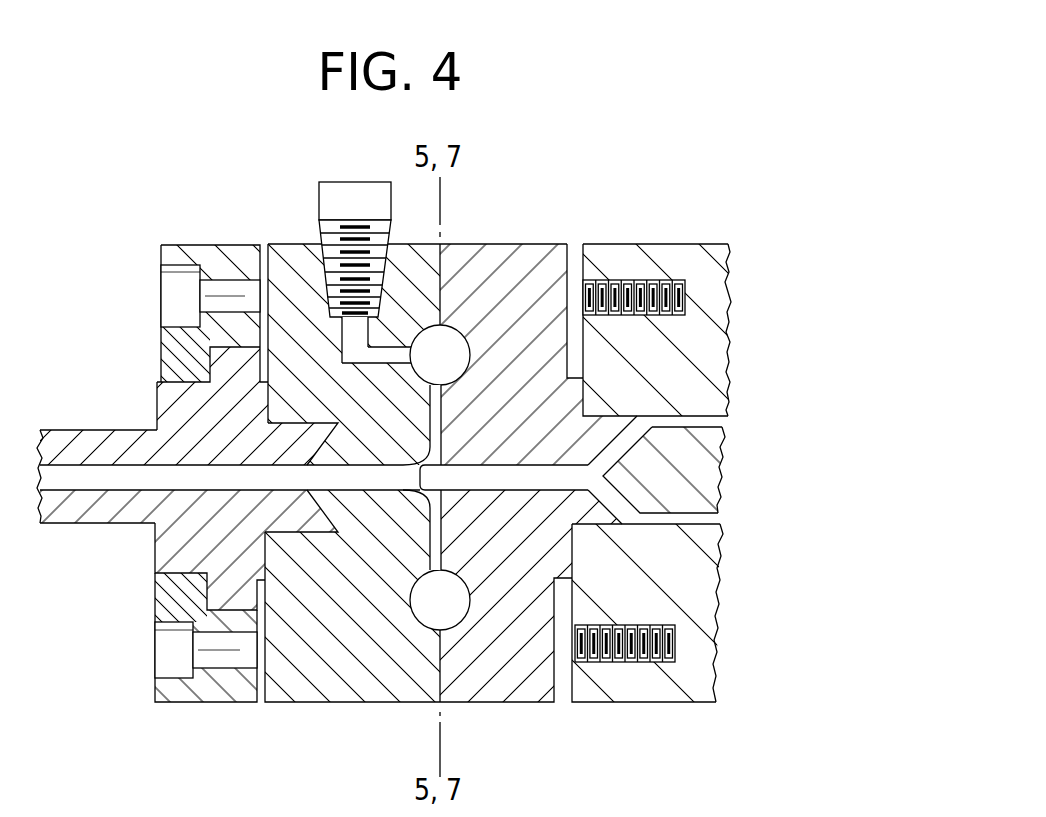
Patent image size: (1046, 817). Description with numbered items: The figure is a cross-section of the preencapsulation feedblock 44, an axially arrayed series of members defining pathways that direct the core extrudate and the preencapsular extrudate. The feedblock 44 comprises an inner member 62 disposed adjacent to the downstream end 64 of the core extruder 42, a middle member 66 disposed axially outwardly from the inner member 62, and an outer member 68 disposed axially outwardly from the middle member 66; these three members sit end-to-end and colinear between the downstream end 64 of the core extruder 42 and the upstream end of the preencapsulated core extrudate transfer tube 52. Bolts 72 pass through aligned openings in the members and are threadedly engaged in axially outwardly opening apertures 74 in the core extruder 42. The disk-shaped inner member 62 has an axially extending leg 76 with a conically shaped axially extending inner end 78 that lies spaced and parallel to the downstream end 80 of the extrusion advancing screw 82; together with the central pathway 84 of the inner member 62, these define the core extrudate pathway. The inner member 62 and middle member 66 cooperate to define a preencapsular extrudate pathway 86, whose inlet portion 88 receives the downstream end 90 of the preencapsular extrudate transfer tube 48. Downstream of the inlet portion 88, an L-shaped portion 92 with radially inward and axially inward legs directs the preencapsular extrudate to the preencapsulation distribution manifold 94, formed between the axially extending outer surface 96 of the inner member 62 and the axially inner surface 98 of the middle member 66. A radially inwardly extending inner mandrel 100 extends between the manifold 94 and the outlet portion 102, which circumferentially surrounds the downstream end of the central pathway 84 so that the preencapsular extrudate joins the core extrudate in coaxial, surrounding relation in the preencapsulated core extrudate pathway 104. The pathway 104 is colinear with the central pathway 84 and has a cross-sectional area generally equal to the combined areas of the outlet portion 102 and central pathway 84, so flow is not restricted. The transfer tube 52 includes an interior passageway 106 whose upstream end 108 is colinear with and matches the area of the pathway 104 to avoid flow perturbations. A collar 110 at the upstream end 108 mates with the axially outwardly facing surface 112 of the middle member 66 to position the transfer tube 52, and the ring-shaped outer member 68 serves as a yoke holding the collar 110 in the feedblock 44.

The core extruder 42 is at (728, 246).
The preencapsulation feedblock 44 is at (140, 607).
The preencapsular extrudate transfer tube 48 is at (319, 196).
The preencapsulated core extrudate transfer tube 52 is at (110, 524).
The inner member 62 is at (537, 710).
The downstream end of core extruder 64 is at (574, 243).
The middle member 66 is at (317, 703).
The outer member 68 is at (198, 703).
The bolts 72 is at (170, 281).
The apertures 74 is at (660, 663).
The axially extending leg 76 is at (607, 415).
The conically shaped axially extending inner end 78 is at (617, 447).
The downstream end of extrusion advancing screw 80 is at (647, 423).
The extrusion advancing screw 82 is at (708, 464).
The central pathway 84 is at (565, 483).
The preencapsular extrudate pathway 86 is at (400, 333).
The inlet portion 88 is at (323, 252).
The downstream end of preencapsular extrudate transfer tube 90 is at (391, 215).
The L-shaped portion 92 is at (347, 341).
The preencapsulation distribution manifold 94 is at (460, 362).
The axially extending outer surface of inner member 96 is at (436, 650).
The axially inner surface of middle member 98 is at (441, 650).
The inner mandrel 100 is at (440, 495).
The outlet portion 102 is at (420, 470).
The preencapsulated core extrudate pathway 104 is at (368, 470).
The interior passageway 106 is at (118, 463).
The upstream end of interior passageway 108 is at (283, 467).
The collar 110 is at (155, 403).
The axially outwardly facing surface of middle member 112 is at (265, 393).